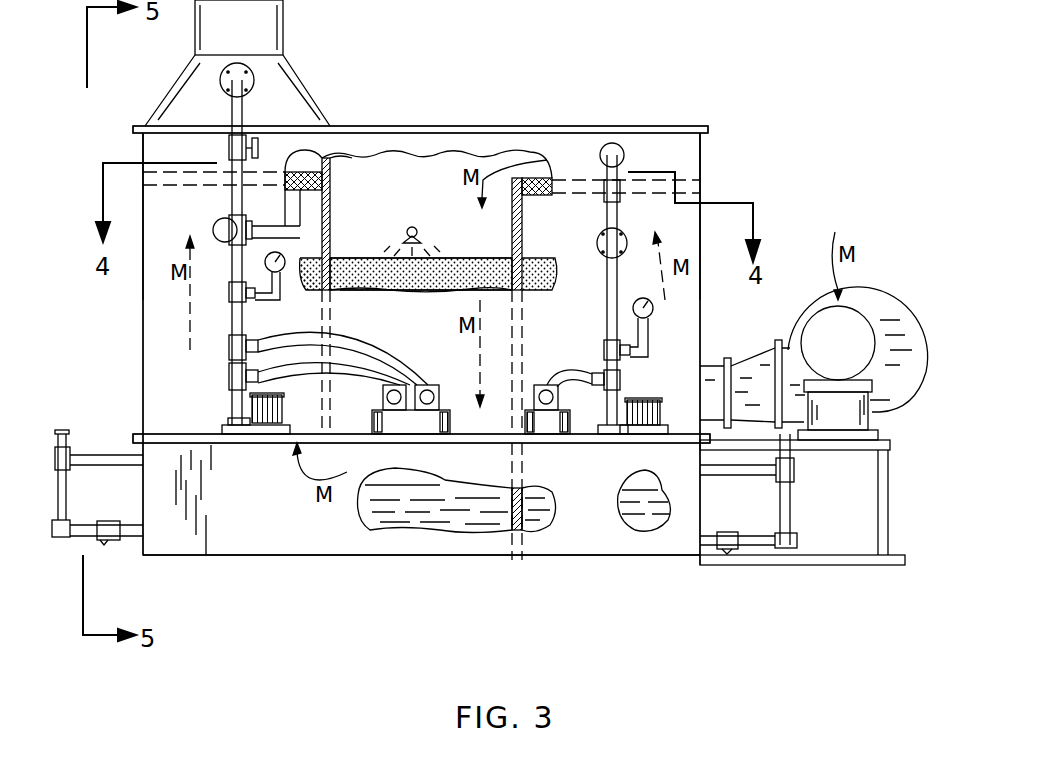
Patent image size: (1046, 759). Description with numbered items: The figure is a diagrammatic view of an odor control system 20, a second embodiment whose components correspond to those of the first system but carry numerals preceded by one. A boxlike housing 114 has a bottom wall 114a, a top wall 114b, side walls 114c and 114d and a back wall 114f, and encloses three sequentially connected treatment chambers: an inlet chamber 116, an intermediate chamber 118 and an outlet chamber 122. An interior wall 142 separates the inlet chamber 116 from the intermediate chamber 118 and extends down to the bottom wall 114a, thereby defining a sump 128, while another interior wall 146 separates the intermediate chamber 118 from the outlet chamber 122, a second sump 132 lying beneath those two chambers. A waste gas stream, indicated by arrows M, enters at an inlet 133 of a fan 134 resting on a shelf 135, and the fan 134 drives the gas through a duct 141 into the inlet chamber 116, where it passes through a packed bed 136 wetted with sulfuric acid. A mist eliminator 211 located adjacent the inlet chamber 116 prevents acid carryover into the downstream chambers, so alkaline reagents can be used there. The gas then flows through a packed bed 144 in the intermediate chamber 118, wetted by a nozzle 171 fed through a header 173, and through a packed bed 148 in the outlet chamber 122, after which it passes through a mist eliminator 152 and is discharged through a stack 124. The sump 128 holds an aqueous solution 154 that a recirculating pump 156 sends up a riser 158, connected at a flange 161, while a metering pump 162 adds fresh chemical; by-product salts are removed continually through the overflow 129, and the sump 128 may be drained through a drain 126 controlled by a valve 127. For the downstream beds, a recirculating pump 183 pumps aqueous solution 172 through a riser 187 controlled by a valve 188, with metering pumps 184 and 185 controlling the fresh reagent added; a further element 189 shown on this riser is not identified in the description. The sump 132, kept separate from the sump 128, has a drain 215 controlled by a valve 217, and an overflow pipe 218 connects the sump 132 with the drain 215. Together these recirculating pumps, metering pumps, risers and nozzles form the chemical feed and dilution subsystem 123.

The odor control system 20 is at (644, 86).
The housing 114 is at (382, 80).
The bottom wall 114a is at (287, 560).
The top wall 114b is at (665, 127).
The side wall 114c is at (700, 188).
The side wall 114d is at (143, 298).
The back wall 114f is at (404, 194).
The inlet chamber 116 is at (690, 163).
The intermediate chamber 118 is at (400, 156).
The outlet chamber 122 is at (143, 138).
The chemical feed and dilution subsystem 123 is at (173, 408).
The stack 124 is at (283, 18).
The drain 126 is at (752, 547).
The valve 127 is at (730, 532).
The sump 128 is at (545, 540).
The overflow 129 is at (752, 474).
The sump 132 is at (310, 545).
The inlet 133 is at (860, 320).
The fan 134 is at (880, 404).
The shelf 135 is at (890, 447).
The packed bed 136 is at (538, 286).
The duct 141 is at (778, 350).
The interior wall 142 is at (522, 230).
The packed bed 144 is at (452, 262).
The interior wall 146 is at (332, 175).
The packed bed 148 is at (324, 292).
The mist eliminator 152 is at (312, 165).
The aqueous solution 154 is at (643, 523).
The recirculating pump 156 is at (682, 392).
The riser 158 is at (606, 320).
The flange 161 is at (620, 240).
The metering pump 162 is at (548, 406).
The nozzle 171 is at (404, 241).
The aqueous solution 172 is at (403, 523).
The header 173 is at (414, 227).
The recirculating pump 183 is at (295, 436).
The metering pump 184 is at (400, 407).
The metering pump 185 is at (440, 402).
The riser 187 is at (229, 375).
The valve 188 is at (229, 147).
The valve 189 is at (229, 225).
The mist eliminator 211 is at (532, 176).
The drain 215 is at (128, 545).
The valve 217 is at (113, 545).
The overflow pipe 218 is at (105, 470).